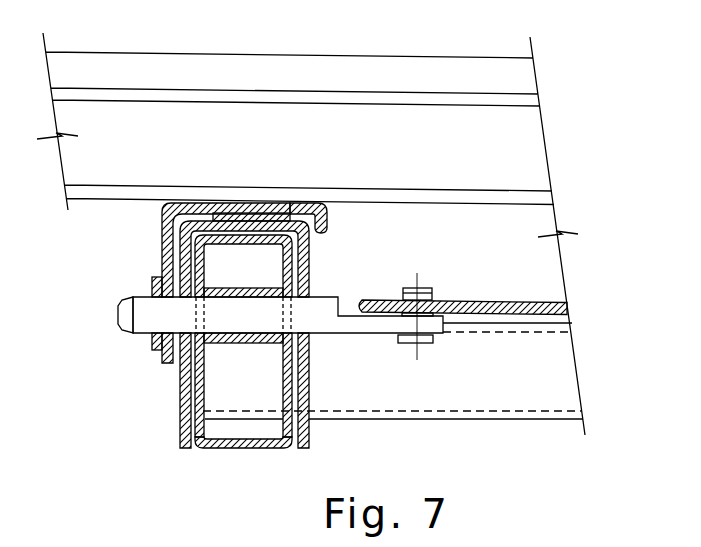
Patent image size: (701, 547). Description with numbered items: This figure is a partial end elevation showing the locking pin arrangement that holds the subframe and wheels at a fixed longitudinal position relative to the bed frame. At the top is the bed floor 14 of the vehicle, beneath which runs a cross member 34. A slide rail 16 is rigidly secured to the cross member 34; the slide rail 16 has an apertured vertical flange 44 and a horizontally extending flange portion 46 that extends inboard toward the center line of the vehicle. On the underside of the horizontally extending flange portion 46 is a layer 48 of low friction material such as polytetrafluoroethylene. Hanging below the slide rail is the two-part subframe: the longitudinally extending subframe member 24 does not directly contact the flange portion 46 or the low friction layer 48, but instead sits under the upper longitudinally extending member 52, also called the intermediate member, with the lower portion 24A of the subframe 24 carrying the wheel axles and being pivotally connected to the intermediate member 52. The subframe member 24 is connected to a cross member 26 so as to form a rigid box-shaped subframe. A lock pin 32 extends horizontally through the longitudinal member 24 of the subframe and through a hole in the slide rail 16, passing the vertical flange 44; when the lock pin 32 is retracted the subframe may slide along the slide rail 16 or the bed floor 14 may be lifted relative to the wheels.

The bed floor 14 is at (397, 55).
The slide rail 16 is at (162, 262).
The longitudinally extending subframe member 24 is at (177, 404).
The lower portion of the subframe 24A is at (238, 452).
The cross member 26 is at (353, 400).
The lock pin 32 is at (148, 330).
The cross member 34 is at (395, 180).
The apertured vertical flange 44 is at (162, 240).
The horizontally extending flange portion 46 is at (305, 205).
The layer of low friction material 48 is at (228, 212).
The upper longitudinally extending member 52 is at (310, 250).